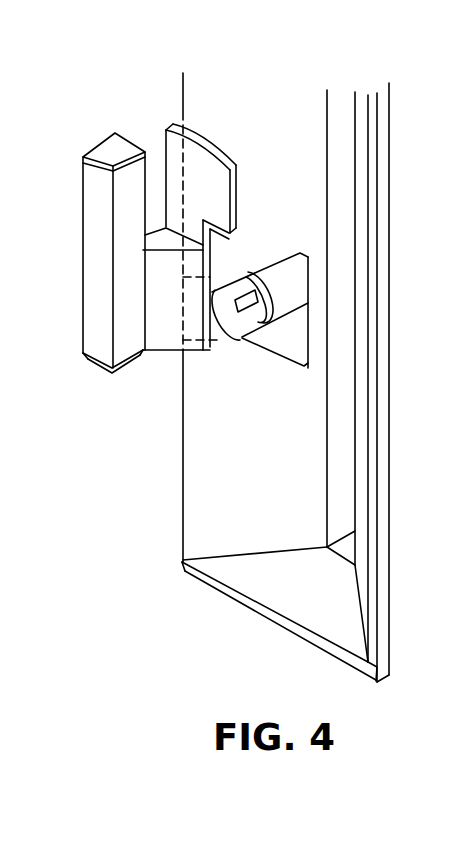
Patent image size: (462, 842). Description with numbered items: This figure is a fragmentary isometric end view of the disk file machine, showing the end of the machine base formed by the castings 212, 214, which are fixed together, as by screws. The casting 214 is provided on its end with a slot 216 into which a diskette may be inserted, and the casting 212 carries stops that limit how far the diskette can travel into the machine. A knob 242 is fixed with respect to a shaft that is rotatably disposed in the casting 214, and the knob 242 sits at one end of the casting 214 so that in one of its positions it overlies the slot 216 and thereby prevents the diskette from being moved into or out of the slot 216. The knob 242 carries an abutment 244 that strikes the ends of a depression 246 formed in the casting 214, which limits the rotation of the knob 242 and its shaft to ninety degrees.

The casting 212 is at (390, 505).
The casting 214 is at (181, 507).
The slot 216 is at (335, 509).
The knob 242 is at (130, 368).
The abutment 244 is at (233, 287).
The depression 246 is at (284, 343).